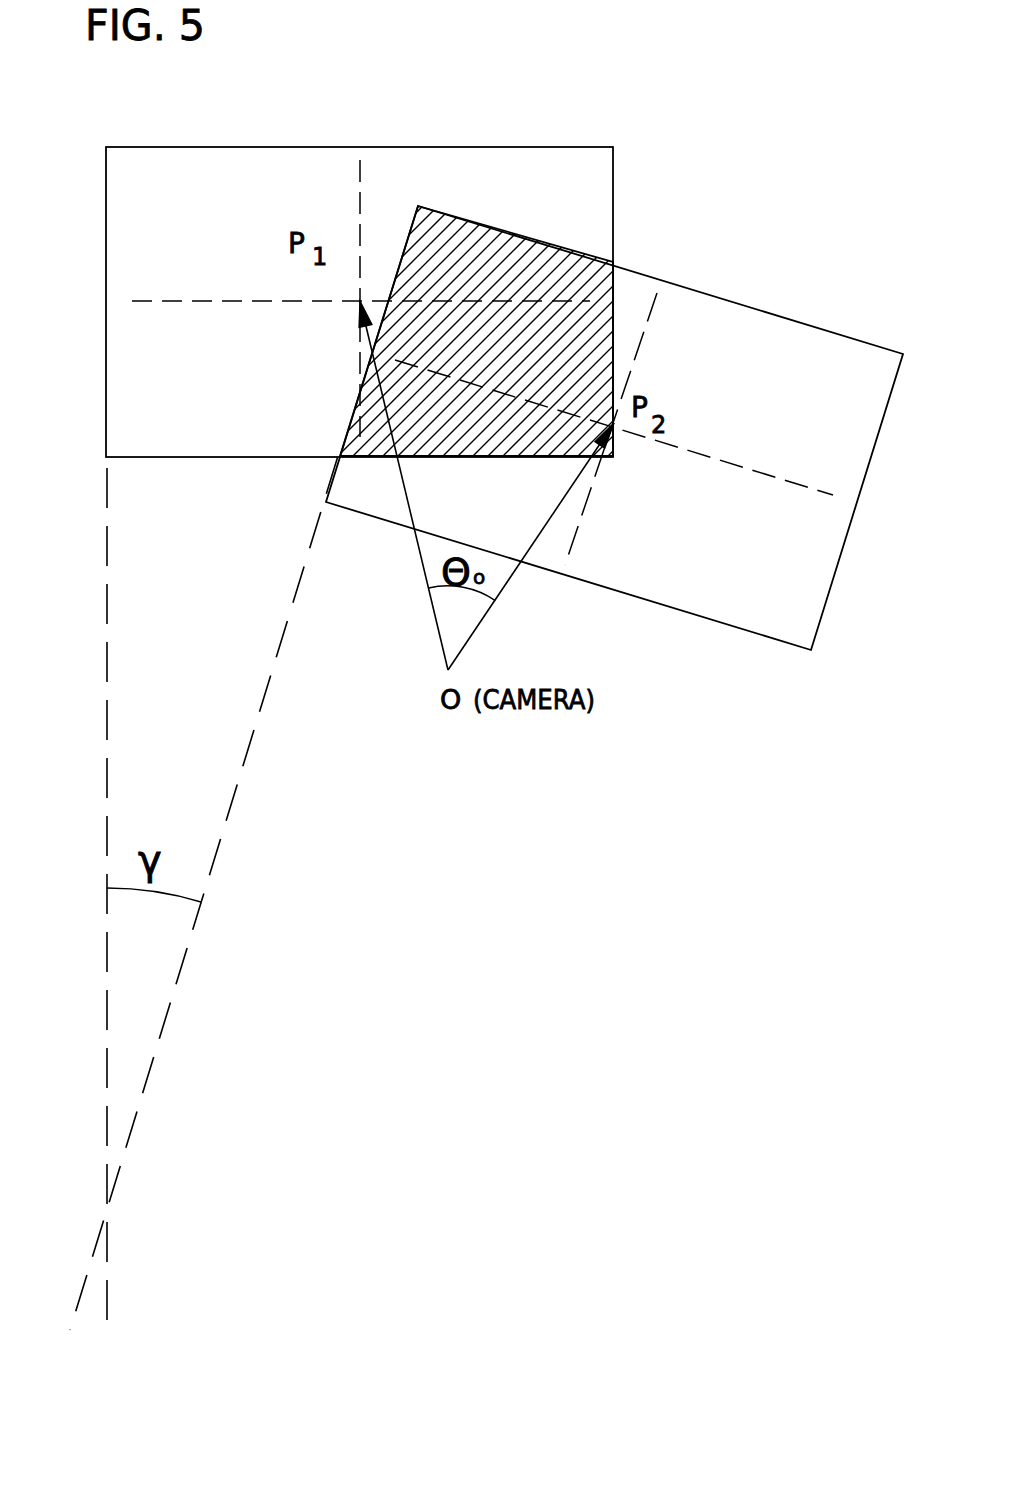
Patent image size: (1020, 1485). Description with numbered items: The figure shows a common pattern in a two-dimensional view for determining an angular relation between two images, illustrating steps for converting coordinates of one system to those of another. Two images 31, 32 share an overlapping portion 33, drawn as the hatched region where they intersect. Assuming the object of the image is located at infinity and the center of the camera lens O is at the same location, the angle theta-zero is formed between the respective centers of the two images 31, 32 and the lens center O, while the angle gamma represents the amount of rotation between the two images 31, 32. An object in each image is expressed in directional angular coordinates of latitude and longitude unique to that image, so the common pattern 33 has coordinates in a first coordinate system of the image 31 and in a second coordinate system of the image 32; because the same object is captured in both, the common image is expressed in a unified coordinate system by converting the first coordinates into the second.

The image 31 is at (195, 150).
The image 32 is at (740, 335).
The overlapping portion 33 is at (543, 258).